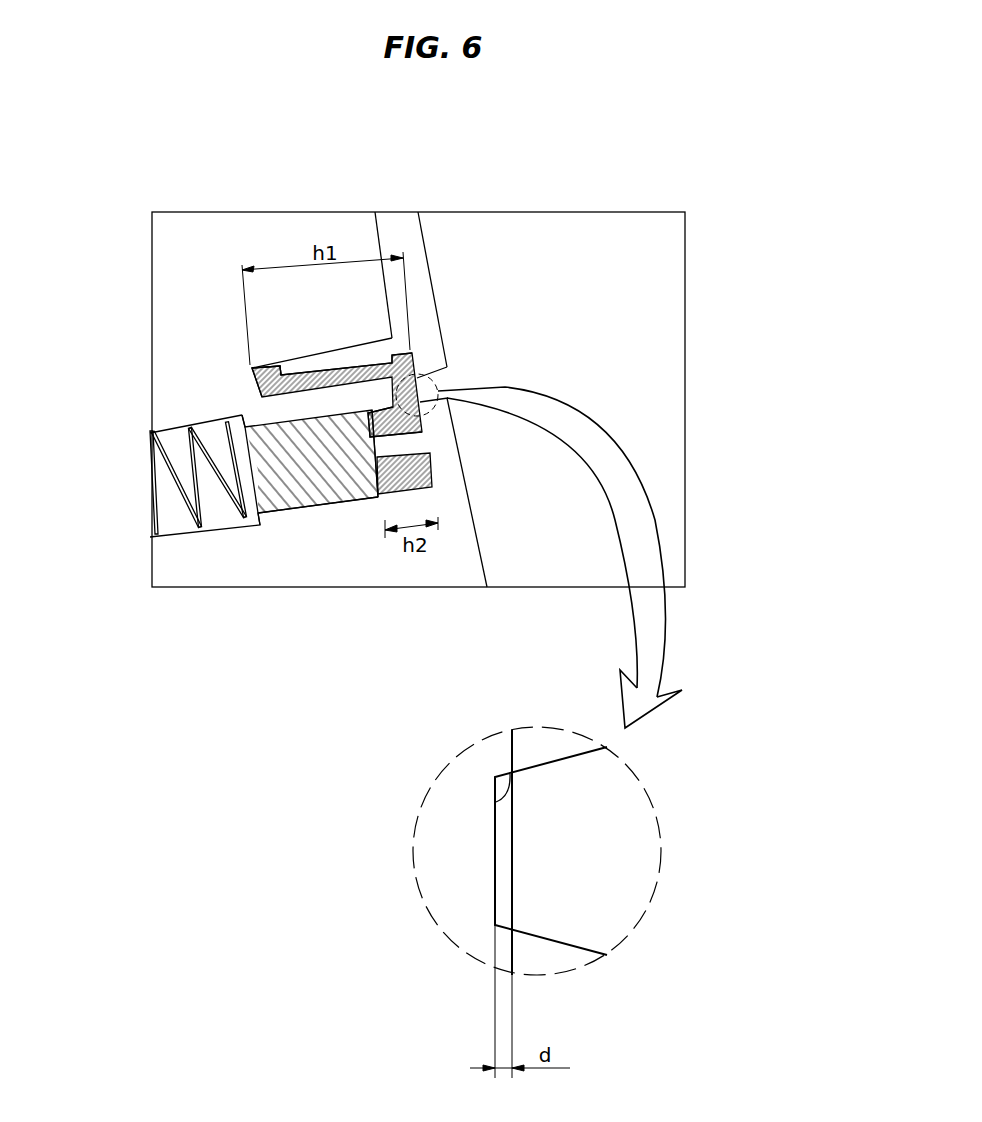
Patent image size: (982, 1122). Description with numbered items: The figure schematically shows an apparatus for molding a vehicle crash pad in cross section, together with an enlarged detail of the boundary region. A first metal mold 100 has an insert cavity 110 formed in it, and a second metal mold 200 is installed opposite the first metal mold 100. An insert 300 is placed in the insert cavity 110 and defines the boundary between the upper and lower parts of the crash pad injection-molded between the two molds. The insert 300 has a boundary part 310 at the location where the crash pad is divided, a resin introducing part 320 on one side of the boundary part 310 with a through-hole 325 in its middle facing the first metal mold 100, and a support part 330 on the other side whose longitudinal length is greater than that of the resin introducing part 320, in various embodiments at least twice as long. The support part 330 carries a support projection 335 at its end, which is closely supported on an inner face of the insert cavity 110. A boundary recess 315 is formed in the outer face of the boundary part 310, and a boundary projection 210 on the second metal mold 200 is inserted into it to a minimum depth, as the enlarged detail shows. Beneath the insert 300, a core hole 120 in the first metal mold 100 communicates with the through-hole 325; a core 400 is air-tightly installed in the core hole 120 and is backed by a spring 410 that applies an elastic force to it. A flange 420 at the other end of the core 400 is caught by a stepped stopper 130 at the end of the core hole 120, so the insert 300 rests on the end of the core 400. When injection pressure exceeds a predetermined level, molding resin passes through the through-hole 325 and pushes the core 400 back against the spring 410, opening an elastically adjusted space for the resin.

The first metal mold 100 is at (195, 243).
The insert cavity 110 is at (377, 500).
The core hole 120 is at (352, 510).
The stepped stopper 130 is at (265, 517).
The second metal mold 200 is at (598, 237).
The boundary projection 210 is at (440, 383).
The insert 300 is at (412, 347).
The boundary part 310 is at (403, 373).
The boundary recess 315 is at (493, 800).
The resin introducing part 320 is at (420, 478).
The through-hole 325 is at (415, 445).
The support part 330 is at (307, 375).
The support projection 335 is at (252, 370).
The core 400 is at (305, 510).
The spring 410 is at (185, 513).
The flange 420 is at (257, 523).